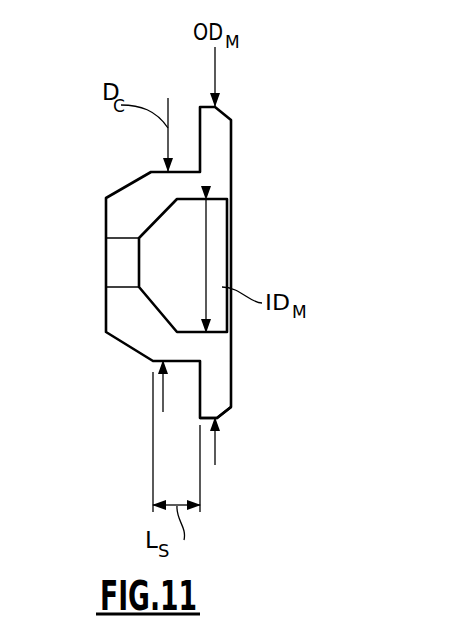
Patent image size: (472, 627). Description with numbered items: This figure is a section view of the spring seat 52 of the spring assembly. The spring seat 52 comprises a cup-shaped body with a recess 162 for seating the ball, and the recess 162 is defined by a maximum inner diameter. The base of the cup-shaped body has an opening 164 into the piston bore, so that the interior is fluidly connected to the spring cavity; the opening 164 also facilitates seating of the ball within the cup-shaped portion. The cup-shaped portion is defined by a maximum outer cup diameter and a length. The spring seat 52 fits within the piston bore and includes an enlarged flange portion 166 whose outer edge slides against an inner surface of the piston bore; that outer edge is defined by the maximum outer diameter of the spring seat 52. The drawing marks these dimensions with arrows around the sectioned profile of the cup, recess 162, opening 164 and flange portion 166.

The spring seat 52 is at (331, 182).
The recess 162 is at (224, 251).
The opening 164 is at (110, 263).
The enlarged flange portion 166 is at (223, 398).